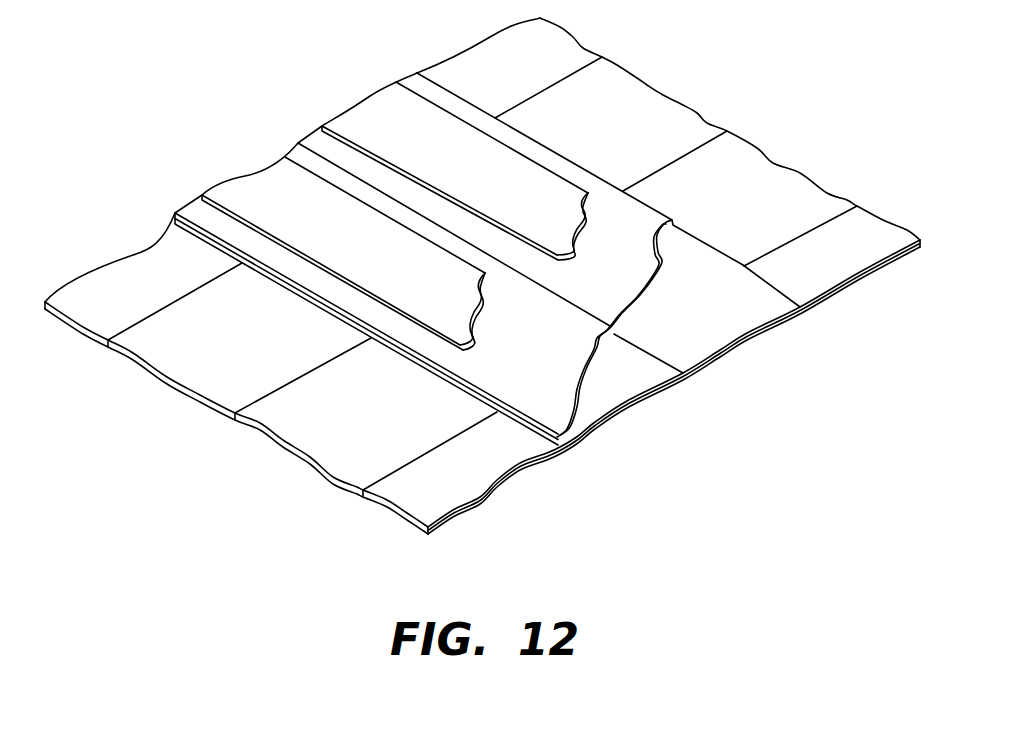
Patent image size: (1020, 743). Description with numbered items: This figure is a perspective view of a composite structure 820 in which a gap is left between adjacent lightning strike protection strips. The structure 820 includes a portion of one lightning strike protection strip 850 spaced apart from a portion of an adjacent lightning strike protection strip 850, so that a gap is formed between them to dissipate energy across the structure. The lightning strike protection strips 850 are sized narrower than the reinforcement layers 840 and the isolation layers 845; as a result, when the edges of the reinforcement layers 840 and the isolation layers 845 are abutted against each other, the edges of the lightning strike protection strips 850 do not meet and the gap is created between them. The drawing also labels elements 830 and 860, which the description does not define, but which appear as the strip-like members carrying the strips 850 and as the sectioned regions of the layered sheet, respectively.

The structure 820 is at (281, 116).
The strip member 830 is at (210, 178).
The reinforcement layer 840 is at (640, 377).
The isolation layer 845 is at (612, 236).
The lightning strike protection strip 850 is at (482, 150).
The tile section 860 is at (662, 107).